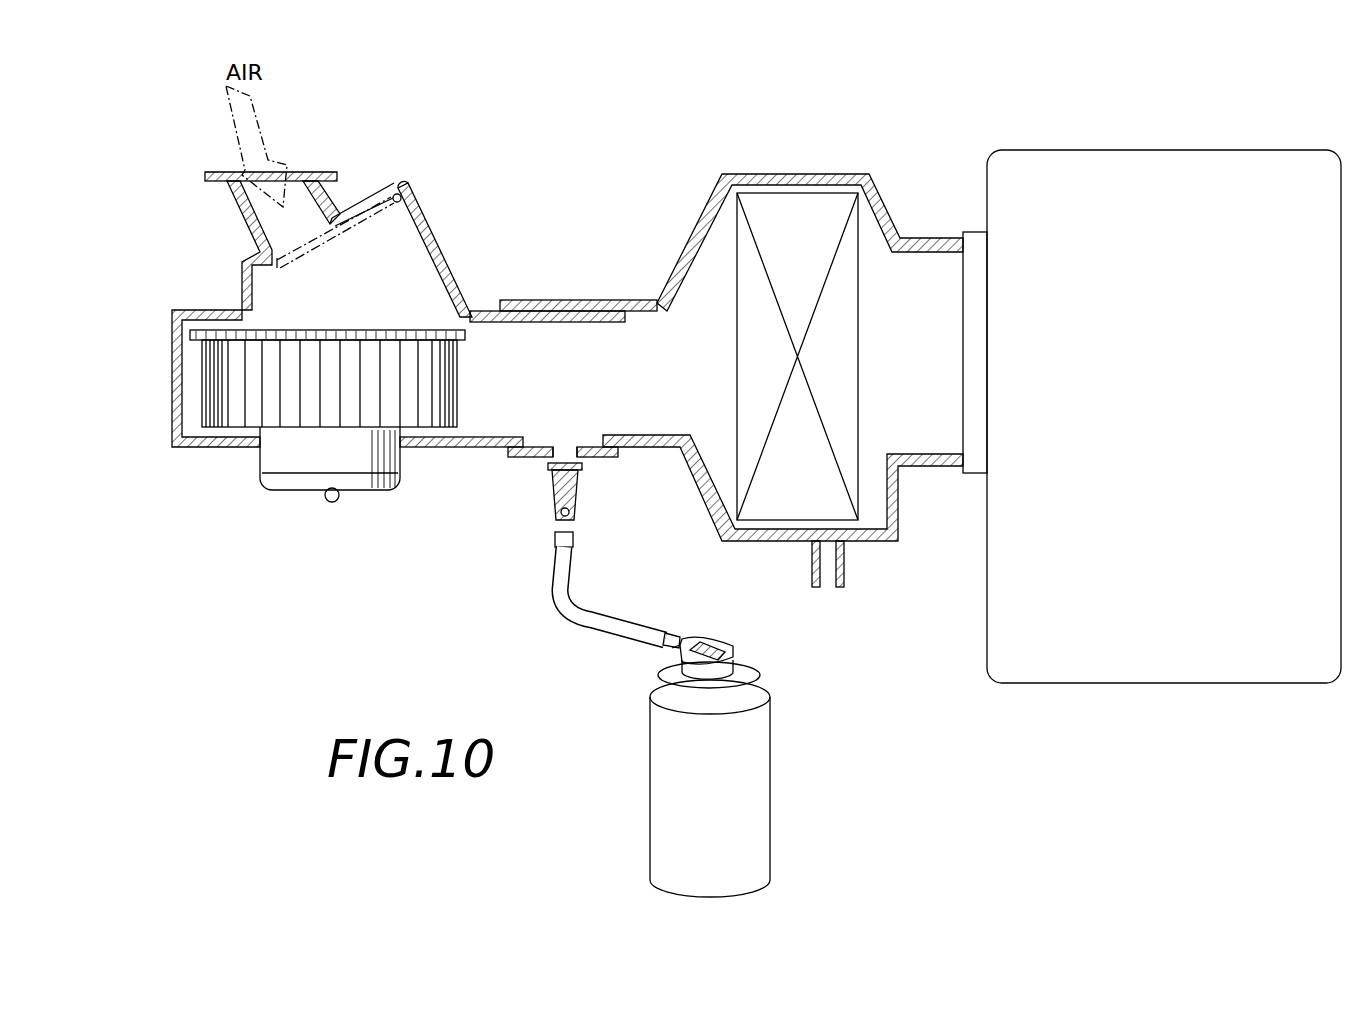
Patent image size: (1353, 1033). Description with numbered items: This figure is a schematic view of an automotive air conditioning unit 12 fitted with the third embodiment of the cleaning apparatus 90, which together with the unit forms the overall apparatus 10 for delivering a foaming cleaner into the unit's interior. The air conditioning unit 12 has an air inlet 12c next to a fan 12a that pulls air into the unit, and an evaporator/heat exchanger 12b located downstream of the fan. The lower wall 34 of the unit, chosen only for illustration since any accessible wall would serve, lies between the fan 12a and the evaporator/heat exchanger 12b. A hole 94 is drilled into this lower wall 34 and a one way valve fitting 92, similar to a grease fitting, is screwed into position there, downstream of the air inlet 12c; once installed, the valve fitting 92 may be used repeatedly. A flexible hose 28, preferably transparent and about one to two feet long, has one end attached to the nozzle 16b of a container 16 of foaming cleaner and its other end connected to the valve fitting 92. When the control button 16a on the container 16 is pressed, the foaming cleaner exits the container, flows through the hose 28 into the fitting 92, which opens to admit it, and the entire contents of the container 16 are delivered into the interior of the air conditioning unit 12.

The apparatus 10 is at (557, 255).
The air conditioning unit 12 is at (686, 222).
The fan 12a is at (257, 415).
The evaporator/heat exchanger 12b is at (822, 212).
The air inlet 12c is at (302, 190).
The container 16 is at (762, 722).
The control button 16a is at (703, 637).
The nozzle 16b is at (673, 650).
The flexible hose 28 is at (570, 585).
The lower wall 34 is at (580, 447).
The apparatus 90 is at (466, 592).
The one way valve fitting 92 is at (543, 493).
The hole 94 is at (556, 545).